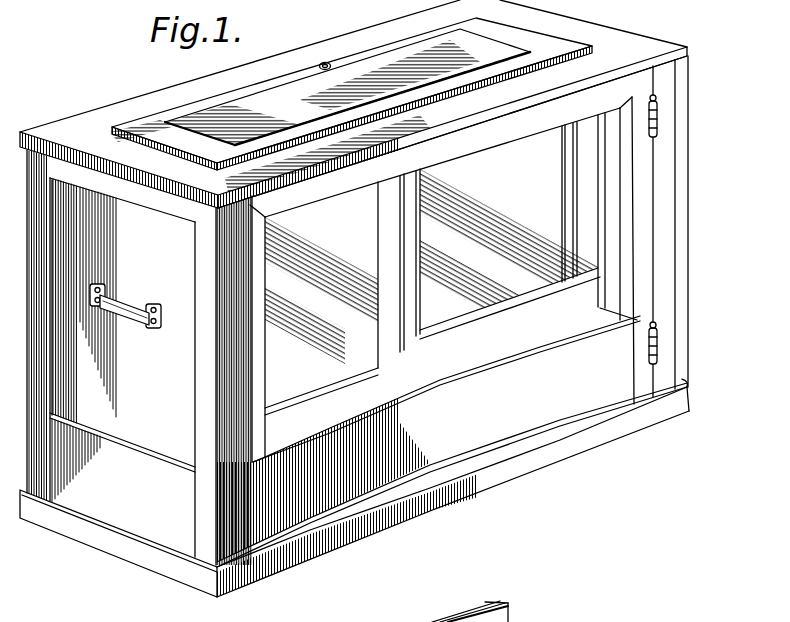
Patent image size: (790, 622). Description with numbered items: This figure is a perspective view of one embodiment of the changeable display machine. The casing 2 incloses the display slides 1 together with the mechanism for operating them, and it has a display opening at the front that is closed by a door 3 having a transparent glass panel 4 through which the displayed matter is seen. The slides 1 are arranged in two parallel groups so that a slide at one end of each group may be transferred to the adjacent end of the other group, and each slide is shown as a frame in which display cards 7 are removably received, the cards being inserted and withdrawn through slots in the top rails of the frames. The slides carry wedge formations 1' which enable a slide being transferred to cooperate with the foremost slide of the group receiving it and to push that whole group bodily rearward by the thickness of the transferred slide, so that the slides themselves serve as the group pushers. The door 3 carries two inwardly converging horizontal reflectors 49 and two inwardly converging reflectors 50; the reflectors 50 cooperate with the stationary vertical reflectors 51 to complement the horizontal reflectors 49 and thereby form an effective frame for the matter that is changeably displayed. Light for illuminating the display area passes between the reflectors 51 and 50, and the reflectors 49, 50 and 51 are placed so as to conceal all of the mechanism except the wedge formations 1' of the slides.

The display slide 1 is at (431, 274).
The wedge formation 1' is at (408, 268).
The casing 2 is at (667, 147).
The door 3 is at (308, 512).
The transparent glass panel 4 is at (318, 432).
The display card 7 is at (353, 340).
The horizontal reflector 49 is at (513, 338).
The inwardly converging reflector 50 is at (612, 220).
The stationary vertical reflector 51 is at (582, 238).